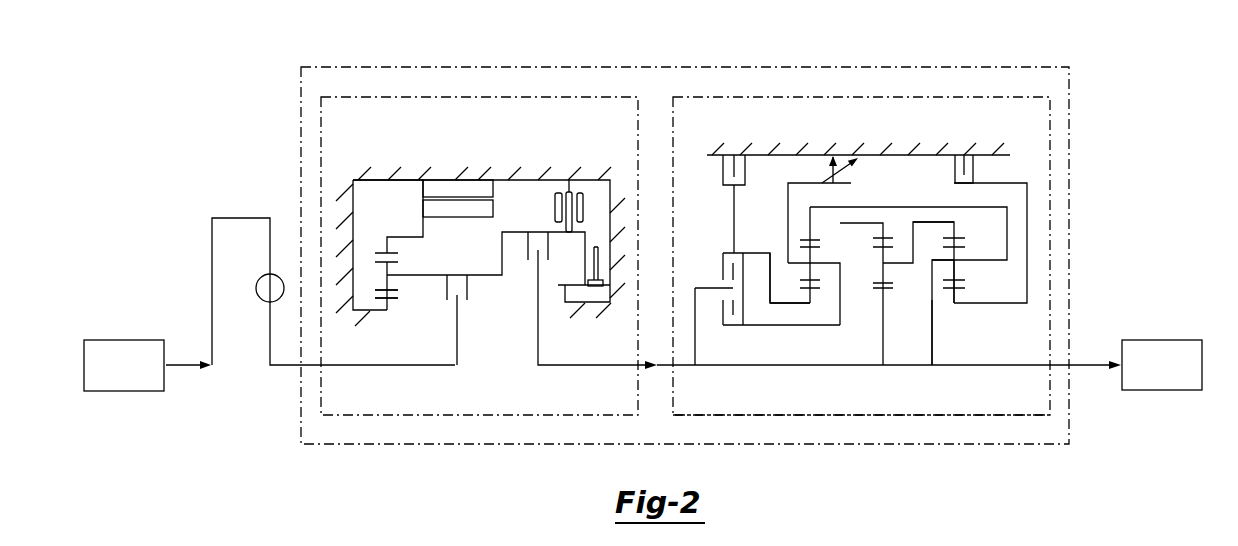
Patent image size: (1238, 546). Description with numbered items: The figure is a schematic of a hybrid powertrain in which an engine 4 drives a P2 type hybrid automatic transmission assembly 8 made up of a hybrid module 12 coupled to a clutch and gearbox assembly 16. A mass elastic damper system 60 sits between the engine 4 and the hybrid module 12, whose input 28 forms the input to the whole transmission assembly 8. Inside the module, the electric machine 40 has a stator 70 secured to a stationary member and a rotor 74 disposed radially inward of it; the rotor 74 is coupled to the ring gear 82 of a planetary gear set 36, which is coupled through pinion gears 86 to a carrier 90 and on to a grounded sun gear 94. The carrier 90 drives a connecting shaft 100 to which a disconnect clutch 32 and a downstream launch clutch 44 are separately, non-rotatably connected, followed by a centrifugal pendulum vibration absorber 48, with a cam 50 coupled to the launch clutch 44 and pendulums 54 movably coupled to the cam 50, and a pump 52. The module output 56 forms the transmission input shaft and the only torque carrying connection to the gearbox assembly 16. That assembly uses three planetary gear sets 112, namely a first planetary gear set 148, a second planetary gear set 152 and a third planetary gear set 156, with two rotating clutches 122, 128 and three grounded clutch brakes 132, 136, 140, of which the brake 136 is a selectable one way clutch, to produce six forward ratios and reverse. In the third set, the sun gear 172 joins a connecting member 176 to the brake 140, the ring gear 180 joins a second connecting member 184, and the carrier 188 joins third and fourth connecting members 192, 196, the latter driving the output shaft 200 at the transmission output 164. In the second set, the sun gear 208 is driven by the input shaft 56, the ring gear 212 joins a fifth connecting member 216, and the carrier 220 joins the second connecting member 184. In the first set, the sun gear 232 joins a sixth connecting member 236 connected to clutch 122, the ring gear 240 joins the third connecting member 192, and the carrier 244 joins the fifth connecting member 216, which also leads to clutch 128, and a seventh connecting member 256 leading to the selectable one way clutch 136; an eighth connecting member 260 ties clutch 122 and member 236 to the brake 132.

The engine 4 is at (105, 338).
The hybrid automatic transmission assembly 8 is at (822, 61).
The hybrid module 12 is at (527, 92).
The clutch and gearbox assembly 16 is at (1012, 92).
The input 28 is at (350, 366).
The disconnect clutch 32 is at (468, 300).
The planetary gear set 36 is at (378, 224).
The electric machine 40 is at (445, 170).
The launch clutch 44 is at (527, 250).
The vibration absorber 48 is at (577, 171).
The cam 50 is at (567, 190).
The pump 52 is at (600, 293).
The pendulums 54 is at (558, 193).
The output 56 is at (562, 366).
The damper system 60 is at (258, 300).
The stator 70 is at (470, 187).
The rotor 74 is at (447, 210).
The ring gear 82 is at (377, 250).
The pinion gears 86 is at (397, 262).
The carrier 90 is at (398, 300).
The sun gear 94 is at (390, 283).
The connecting shaft 100 is at (492, 276).
The three planetary gear sets 112 is at (700, 420).
The rotating clutch 122 is at (744, 265).
The rotating clutch 128 is at (744, 314).
The clutch brake 132 is at (722, 168).
The selectable one way clutch 136 is at (866, 170).
The clutch brake 140 is at (977, 170).
The first planetary gear set 148 is at (803, 340).
The second planetary gear set 152 is at (878, 339).
The third planetary gear set 156 is at (1021, 315).
The transmission output 164 is at (1140, 391).
The sun gear 172 is at (960, 289).
The connecting member 176 is at (1027, 250).
The ring gear 180 is at (965, 238).
The second connecting member 184 is at (943, 222).
The carrier 188 is at (1027, 287).
The third connecting member 192 is at (863, 207).
The fourth connecting member 196 is at (934, 356).
The output shaft 200 is at (967, 367).
The sun gear 208 is at (886, 290).
The ring gear 212 is at (887, 236).
The fifth connecting member 216 is at (851, 224).
The carrier 220 is at (888, 270).
The sun gear 232 is at (818, 290).
The sixth connecting member 236 is at (771, 277).
The ring gear 240 is at (811, 212).
The carrier 244 is at (796, 303).
The seventh connecting member 256 is at (790, 175).
The eighth connecting member 260 is at (733, 210).